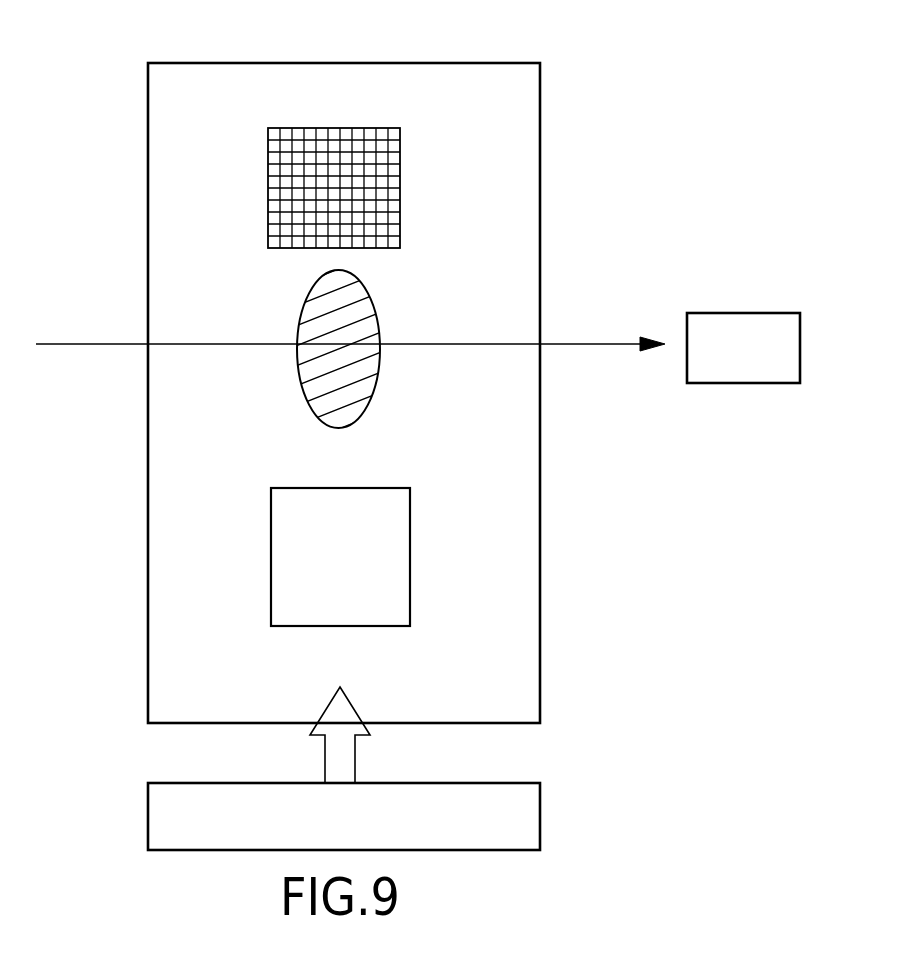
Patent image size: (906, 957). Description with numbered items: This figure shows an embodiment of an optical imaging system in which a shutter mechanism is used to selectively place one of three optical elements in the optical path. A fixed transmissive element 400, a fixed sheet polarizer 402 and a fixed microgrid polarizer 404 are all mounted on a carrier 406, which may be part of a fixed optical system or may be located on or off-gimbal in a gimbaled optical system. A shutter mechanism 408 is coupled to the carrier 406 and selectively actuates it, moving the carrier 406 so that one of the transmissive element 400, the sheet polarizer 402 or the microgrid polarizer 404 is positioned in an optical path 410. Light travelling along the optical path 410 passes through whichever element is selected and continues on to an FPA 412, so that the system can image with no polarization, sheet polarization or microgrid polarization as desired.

The fixed transmissive element 400 is at (410, 550).
The fixed sheet polarizer 402 is at (372, 311).
The fixed microgrid polarizer 404 is at (400, 190).
The carrier 406 is at (203, 103).
The shutter mechanism 408 is at (540, 815).
The optical path 410 is at (592, 344).
The FPA 412 is at (743, 383).